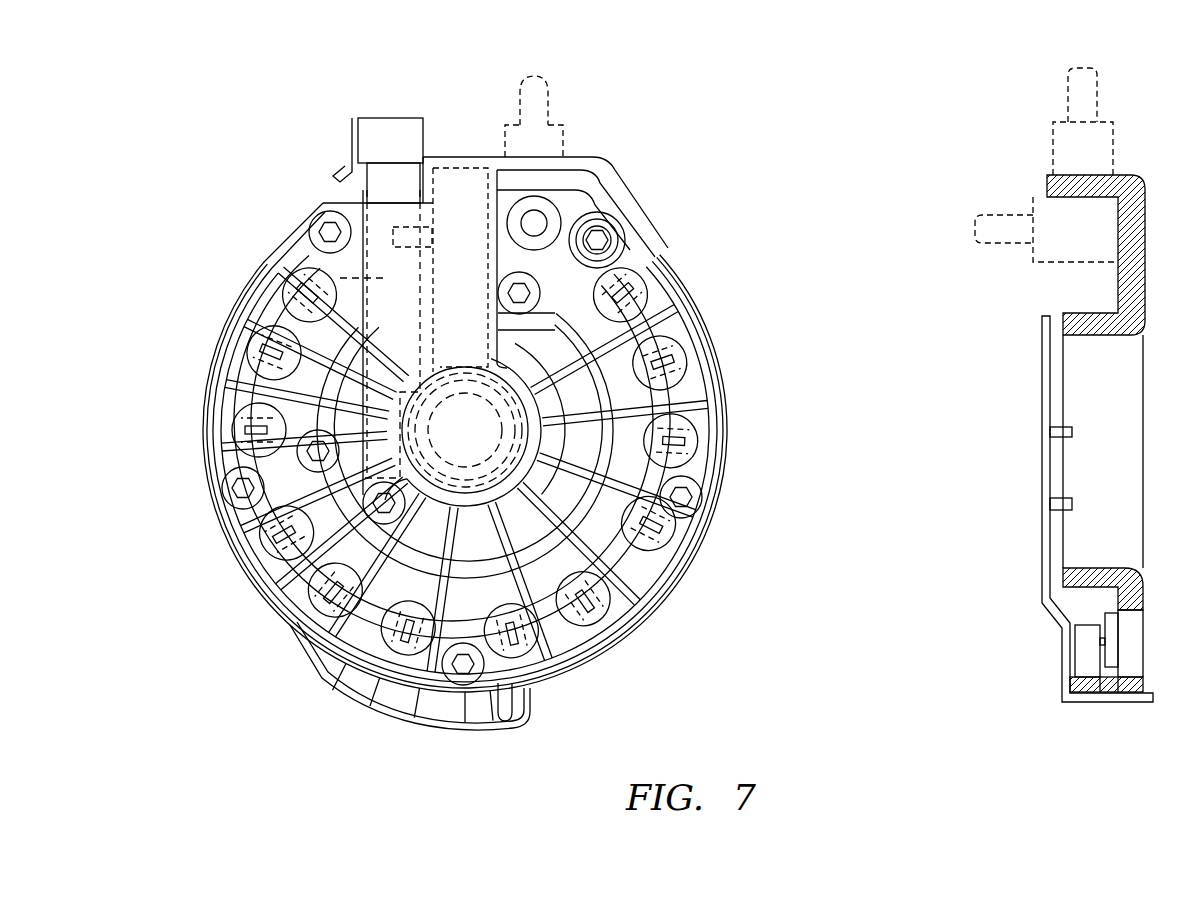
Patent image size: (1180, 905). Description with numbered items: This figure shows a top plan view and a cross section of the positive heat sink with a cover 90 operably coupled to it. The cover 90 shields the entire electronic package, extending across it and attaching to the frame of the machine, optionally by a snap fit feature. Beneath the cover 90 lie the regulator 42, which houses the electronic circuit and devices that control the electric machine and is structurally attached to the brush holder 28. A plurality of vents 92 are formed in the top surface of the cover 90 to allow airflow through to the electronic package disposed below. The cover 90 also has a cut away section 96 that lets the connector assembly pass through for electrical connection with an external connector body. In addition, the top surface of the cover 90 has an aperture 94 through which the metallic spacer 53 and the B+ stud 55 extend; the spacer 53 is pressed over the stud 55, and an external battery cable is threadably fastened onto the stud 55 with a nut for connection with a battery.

The brush holder 28 is at (362, 332).
The regulator 42 is at (448, 451).
The metallic spacer 53 is at (505, 128).
The B+ stud 55 is at (536, 70).
The cover 90 is at (480, 443).
The vents 92 is at (507, 471).
The aperture 94 is at (565, 123).
The cut away section 96 is at (345, 171).